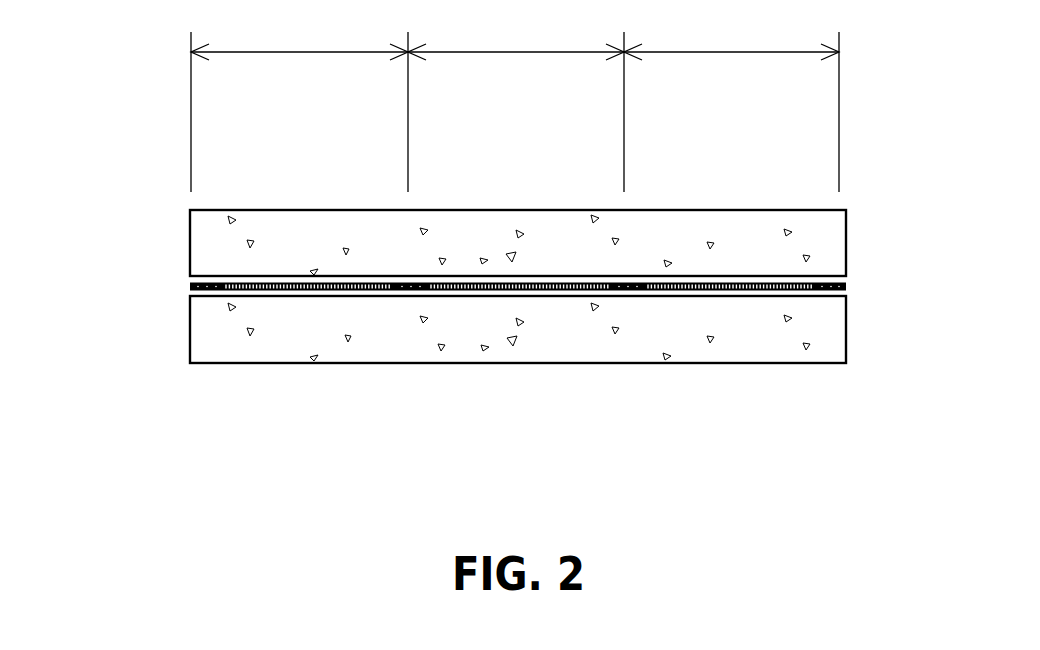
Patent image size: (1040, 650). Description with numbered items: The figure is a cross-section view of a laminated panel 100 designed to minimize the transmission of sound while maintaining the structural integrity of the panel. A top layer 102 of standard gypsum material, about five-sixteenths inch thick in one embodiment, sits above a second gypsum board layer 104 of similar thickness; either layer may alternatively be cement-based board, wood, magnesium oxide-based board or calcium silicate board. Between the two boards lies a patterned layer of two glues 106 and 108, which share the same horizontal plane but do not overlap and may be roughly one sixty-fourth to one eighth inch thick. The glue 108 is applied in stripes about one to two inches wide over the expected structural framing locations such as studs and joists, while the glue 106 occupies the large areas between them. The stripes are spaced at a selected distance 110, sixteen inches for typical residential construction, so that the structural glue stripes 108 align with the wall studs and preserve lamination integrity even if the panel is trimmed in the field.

The laminated panel 100 is at (175, 202).
The top layer 102 is at (785, 259).
The second gypsum board layer 104 is at (682, 333).
The glue layer 106 is at (362, 288).
The glue stripes 108 is at (210, 286).
The selected distance 110 is at (515, 102).